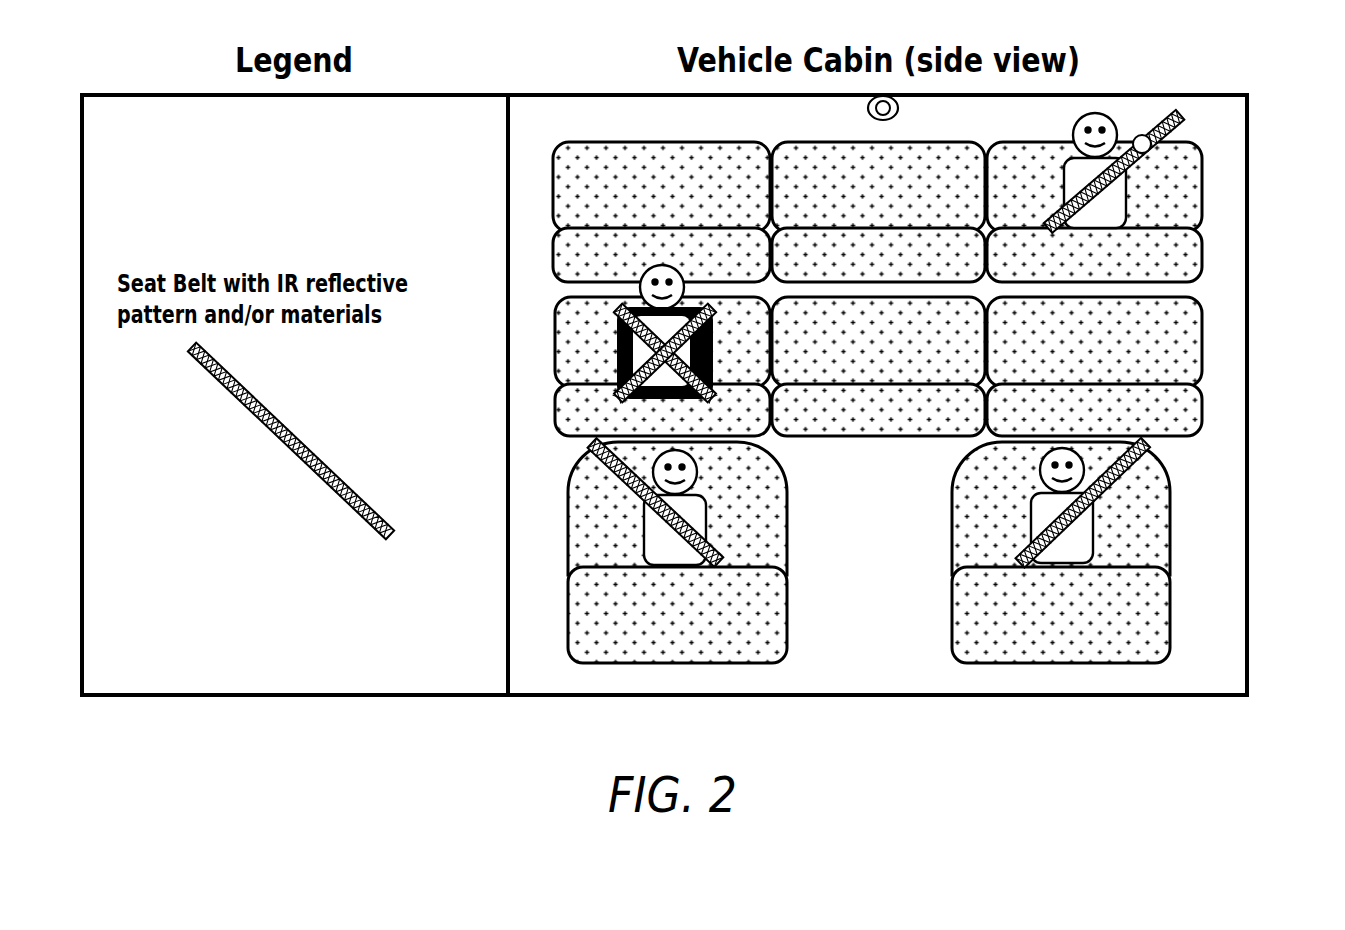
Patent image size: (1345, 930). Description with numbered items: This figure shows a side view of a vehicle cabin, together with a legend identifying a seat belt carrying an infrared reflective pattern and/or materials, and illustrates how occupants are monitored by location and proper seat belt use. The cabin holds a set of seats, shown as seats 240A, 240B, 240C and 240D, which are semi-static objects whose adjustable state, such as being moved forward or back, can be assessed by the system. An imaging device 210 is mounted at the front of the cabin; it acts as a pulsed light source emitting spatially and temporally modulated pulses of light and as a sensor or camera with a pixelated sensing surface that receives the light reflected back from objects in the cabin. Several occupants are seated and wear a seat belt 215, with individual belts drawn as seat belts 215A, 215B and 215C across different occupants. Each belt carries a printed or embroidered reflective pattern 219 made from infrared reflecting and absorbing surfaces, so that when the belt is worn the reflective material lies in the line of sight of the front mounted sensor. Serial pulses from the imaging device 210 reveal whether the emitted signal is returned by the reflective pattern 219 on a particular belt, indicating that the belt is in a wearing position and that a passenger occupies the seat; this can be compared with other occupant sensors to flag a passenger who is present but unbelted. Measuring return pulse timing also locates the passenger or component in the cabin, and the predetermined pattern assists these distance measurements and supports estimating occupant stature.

The imaging device 210 is at (868, 103).
The seat belt 215 is at (1132, 473).
The seat belt (rear right occupant) 215A is at (1148, 130).
The seat belts (middle row child seat, crossed) 215B is at (617, 333).
The seat belt (front driver seat) 215C is at (597, 467).
The reflective pattern 219 is at (1147, 152).
The seat A (front left) 240A is at (677, 552).
The seat B (front right) 240B is at (1061, 552).
The seat C (rear middle, row 1) 240C is at (878, 212).
The seat D (rear middle, row 2) 240D is at (878, 366).